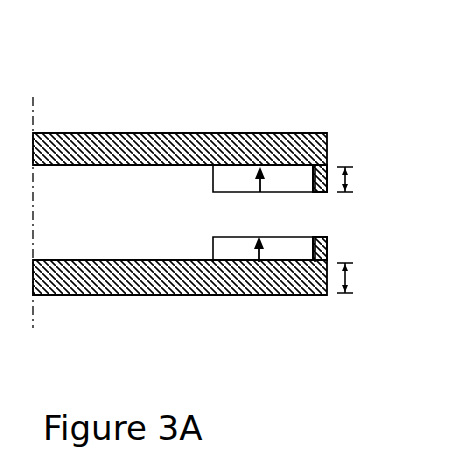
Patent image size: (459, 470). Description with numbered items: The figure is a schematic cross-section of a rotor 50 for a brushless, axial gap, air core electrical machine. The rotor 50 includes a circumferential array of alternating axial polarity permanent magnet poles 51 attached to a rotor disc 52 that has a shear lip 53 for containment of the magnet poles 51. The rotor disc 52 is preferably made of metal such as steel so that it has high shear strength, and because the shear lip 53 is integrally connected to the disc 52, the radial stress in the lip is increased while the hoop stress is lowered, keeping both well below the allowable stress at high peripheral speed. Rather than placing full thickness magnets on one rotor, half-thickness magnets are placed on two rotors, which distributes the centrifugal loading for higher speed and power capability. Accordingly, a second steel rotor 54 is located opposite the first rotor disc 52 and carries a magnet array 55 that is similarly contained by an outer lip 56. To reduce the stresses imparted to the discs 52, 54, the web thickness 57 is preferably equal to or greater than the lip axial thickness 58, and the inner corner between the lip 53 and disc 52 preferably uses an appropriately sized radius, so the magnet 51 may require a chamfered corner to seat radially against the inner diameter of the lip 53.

The rotor 50 is at (118, 62).
The permanent magnet poles 51 is at (213, 188).
The rotor disc 52 is at (193, 133).
The shear lip 53 is at (313, 196).
The second steel rotor 54 is at (159, 260).
The magnet array 55 is at (238, 237).
The outer lip 56 is at (312, 236).
The web thickness 57 is at (351, 282).
The lip axial thickness 58 is at (351, 179).